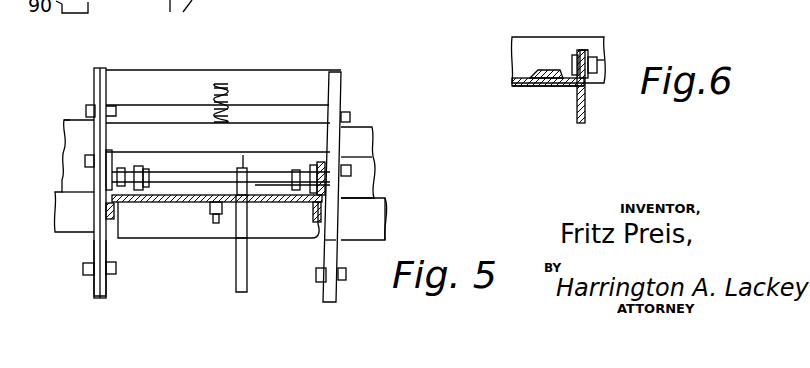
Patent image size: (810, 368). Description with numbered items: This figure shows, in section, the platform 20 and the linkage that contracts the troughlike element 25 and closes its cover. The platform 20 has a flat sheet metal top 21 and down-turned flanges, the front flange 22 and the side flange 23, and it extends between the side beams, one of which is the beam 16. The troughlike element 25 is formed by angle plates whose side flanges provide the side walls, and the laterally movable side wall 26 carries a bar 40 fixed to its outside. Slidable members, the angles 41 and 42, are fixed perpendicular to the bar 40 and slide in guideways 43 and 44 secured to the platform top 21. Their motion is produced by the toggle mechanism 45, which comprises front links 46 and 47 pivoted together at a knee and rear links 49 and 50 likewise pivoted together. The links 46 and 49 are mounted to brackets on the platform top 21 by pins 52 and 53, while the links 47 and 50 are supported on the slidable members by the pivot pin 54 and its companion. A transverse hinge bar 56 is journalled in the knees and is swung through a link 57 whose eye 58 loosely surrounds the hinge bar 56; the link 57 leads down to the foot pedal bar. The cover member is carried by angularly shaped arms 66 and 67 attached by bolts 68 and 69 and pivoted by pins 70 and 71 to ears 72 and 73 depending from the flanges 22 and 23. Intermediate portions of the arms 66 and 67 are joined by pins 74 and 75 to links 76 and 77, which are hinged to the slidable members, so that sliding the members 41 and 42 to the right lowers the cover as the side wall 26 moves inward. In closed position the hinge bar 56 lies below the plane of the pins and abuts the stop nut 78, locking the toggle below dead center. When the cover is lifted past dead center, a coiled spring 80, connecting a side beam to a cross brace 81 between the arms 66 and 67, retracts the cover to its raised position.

In FIG. 5, the side beam 16 is at (386, 219).
In FIG. 5, the platform 20 is at (268, 185).
In FIG. 6, the platform 20 is at (508, 95).
In FIG. 5, the platform top 21 is at (273, 202).
In FIG. 6, the platform top 21 is at (521, 88).
In FIG. 5, the front flange 22 is at (338, 219).
In FIG. 6, the front flange 22 is at (587, 112).
In FIG. 5, the side flange 23 is at (106, 213).
In FIG. 5, the troughlike element 25 is at (55, 121).
In FIG. 5, the side wall 26 is at (177, 144).
In FIG. 5, the bar 40 is at (66, 165).
In FIG. 6, the bar 40 is at (546, 44).
In FIG. 5, the slidable member 41 is at (358, 162).
In FIG. 6, the slidable member 41 is at (586, 62).
In FIG. 5, the slidable member 42 is at (62, 192).
In FIG. 5, the guideway 43 is at (326, 172).
In FIG. 6, the guideway 43 is at (538, 72).
In FIG. 5, the guideway 44 is at (137, 166).
In FIG. 5, the toggle mechanism 45 is at (247, 158).
In FIG. 5, the front link 46 is at (312, 165).
In FIG. 5, the front link 47 is at (324, 203).
In FIG. 5, the rear link 49 is at (121, 168).
In FIG. 5, the rear link 50 is at (218, 220).
In FIG. 5, the pin 52 is at (292, 176).
In FIG. 5, the pin 53 is at (205, 222).
In FIG. 6, the pivot pin 54 is at (574, 62).
In FIG. 5, the hinge bar 56 is at (176, 180).
In FIG. 5, the link 57 is at (236, 284).
In FIG. 5, the eye 58 is at (237, 176).
In FIG. 5, the arm 66 is at (336, 88).
In FIG. 5, the arm 67 is at (96, 86).
In FIG. 5, the bolt 68 is at (351, 118).
In FIG. 5, the bolt 69 is at (87, 108).
In FIG. 5, the pin 70 is at (316, 278).
In FIG. 5, the pin 71 is at (84, 272).
In FIG. 5, the ear 72 is at (324, 262).
In FIG. 5, the ear 73 is at (106, 252).
In FIG. 5, the pin 74 is at (352, 170).
In FIG. 5, the pin 75 is at (86, 160).
In FIG. 5, the link 76 is at (351, 165).
In FIG. 6, the link 76 is at (598, 70).
In FIG. 5, the link 77 is at (102, 155).
In FIG. 5, the stop nut 78 is at (212, 224).
In FIG. 5, the coiled spring 80 is at (232, 92).
In FIG. 5, the cross brace 81 is at (168, 95).